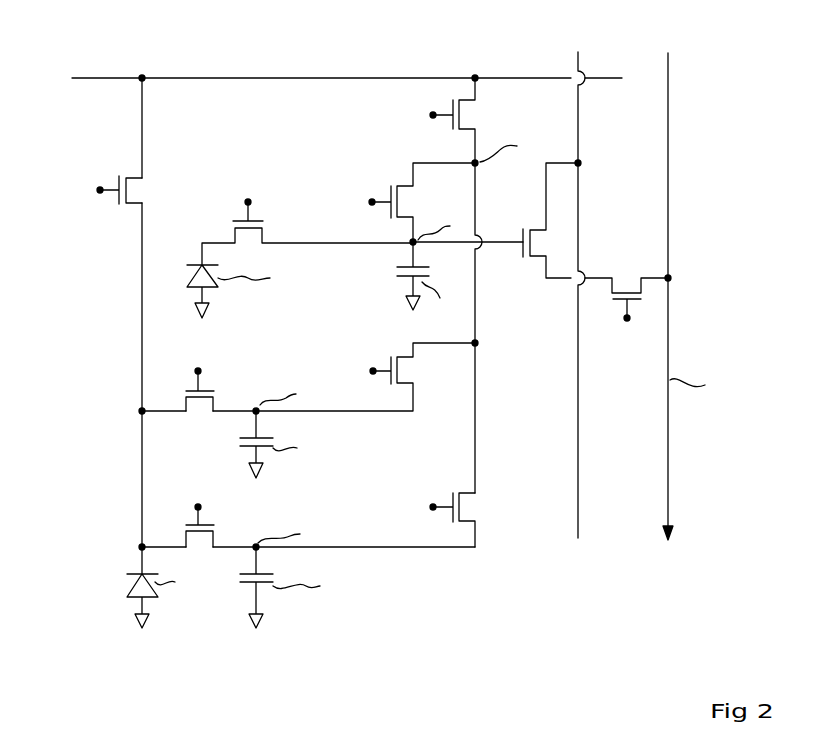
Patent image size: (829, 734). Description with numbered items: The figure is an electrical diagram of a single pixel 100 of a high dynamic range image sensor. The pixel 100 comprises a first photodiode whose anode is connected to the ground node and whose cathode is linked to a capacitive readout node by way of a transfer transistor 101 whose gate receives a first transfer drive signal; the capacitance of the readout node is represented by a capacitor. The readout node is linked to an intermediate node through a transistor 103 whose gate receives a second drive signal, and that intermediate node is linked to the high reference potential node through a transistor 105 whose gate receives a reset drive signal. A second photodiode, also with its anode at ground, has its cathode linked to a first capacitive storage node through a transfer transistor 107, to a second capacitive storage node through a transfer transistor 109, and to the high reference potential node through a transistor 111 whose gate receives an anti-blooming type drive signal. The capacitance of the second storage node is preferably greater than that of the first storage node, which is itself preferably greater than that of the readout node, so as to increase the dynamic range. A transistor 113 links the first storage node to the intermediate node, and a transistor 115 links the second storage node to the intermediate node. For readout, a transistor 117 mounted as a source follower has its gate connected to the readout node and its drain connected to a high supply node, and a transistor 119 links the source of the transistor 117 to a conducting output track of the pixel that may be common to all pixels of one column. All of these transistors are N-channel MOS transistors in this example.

The pixel 100 is at (248, 40).
The transfer transistor 101 is at (233, 221).
The transistor 103 is at (390, 187).
The transistor 105 is at (462, 118).
The transfer transistor 107 is at (214, 403).
The transfer transistor 109 is at (216, 540).
The transistor 111 is at (137, 206).
The transistor 113 is at (410, 353).
The transistor 115 is at (468, 492).
The transistor 117 is at (538, 260).
The transistor 119 is at (617, 268).